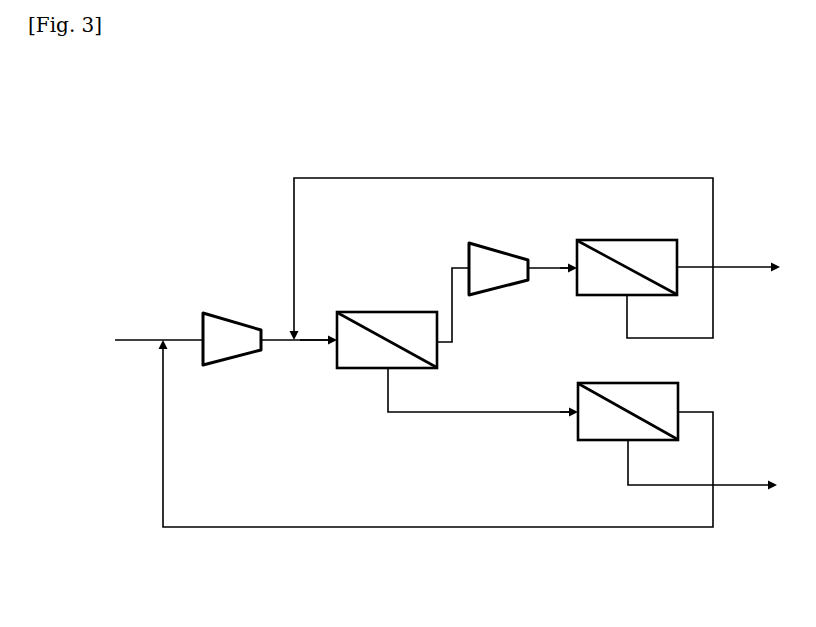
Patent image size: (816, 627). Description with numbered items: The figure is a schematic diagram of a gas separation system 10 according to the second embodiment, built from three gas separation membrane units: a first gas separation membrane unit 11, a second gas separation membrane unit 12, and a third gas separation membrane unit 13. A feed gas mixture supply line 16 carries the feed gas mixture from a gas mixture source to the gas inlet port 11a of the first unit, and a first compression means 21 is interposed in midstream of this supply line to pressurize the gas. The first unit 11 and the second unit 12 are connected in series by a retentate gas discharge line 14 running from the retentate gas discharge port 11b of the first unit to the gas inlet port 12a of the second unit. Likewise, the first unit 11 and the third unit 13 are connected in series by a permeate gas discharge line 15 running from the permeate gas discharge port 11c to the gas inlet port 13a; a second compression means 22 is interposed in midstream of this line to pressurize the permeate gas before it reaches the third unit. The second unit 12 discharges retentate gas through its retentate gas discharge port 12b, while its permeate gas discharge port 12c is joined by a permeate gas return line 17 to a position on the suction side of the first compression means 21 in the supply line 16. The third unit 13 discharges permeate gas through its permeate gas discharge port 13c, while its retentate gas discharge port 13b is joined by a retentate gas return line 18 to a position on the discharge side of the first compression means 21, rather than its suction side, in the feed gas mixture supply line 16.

The gas separation system 10 is at (648, 116).
The first gas separation membrane unit 11 is at (387, 311).
The gas inlet port 11a is at (335, 336).
The retentate gas discharge port 11b is at (380, 370).
The permeate gas discharge port 11c is at (438, 355).
The second gas separation membrane unit 12 is at (603, 382).
The gas inlet port 12a is at (575, 418).
The retentate gas discharge port 12b is at (625, 442).
The permeate gas discharge port 12c is at (680, 408).
The third gas separation membrane unit 13 is at (615, 239).
The gas inlet port 13a is at (574, 276).
The retentate gas discharge port 13b is at (627, 297).
The permeate gas discharge port 13c is at (679, 262).
The retentate gas discharge line 14 is at (468, 413).
The permeate gas discharge line 15 is at (447, 278).
The feed gas mixture supply line 16 is at (143, 339).
The permeate gas return line 17 is at (302, 527).
The retentate gas return line 18 is at (392, 178).
The first compression means 21 is at (236, 316).
The second compression means 22 is at (503, 292).